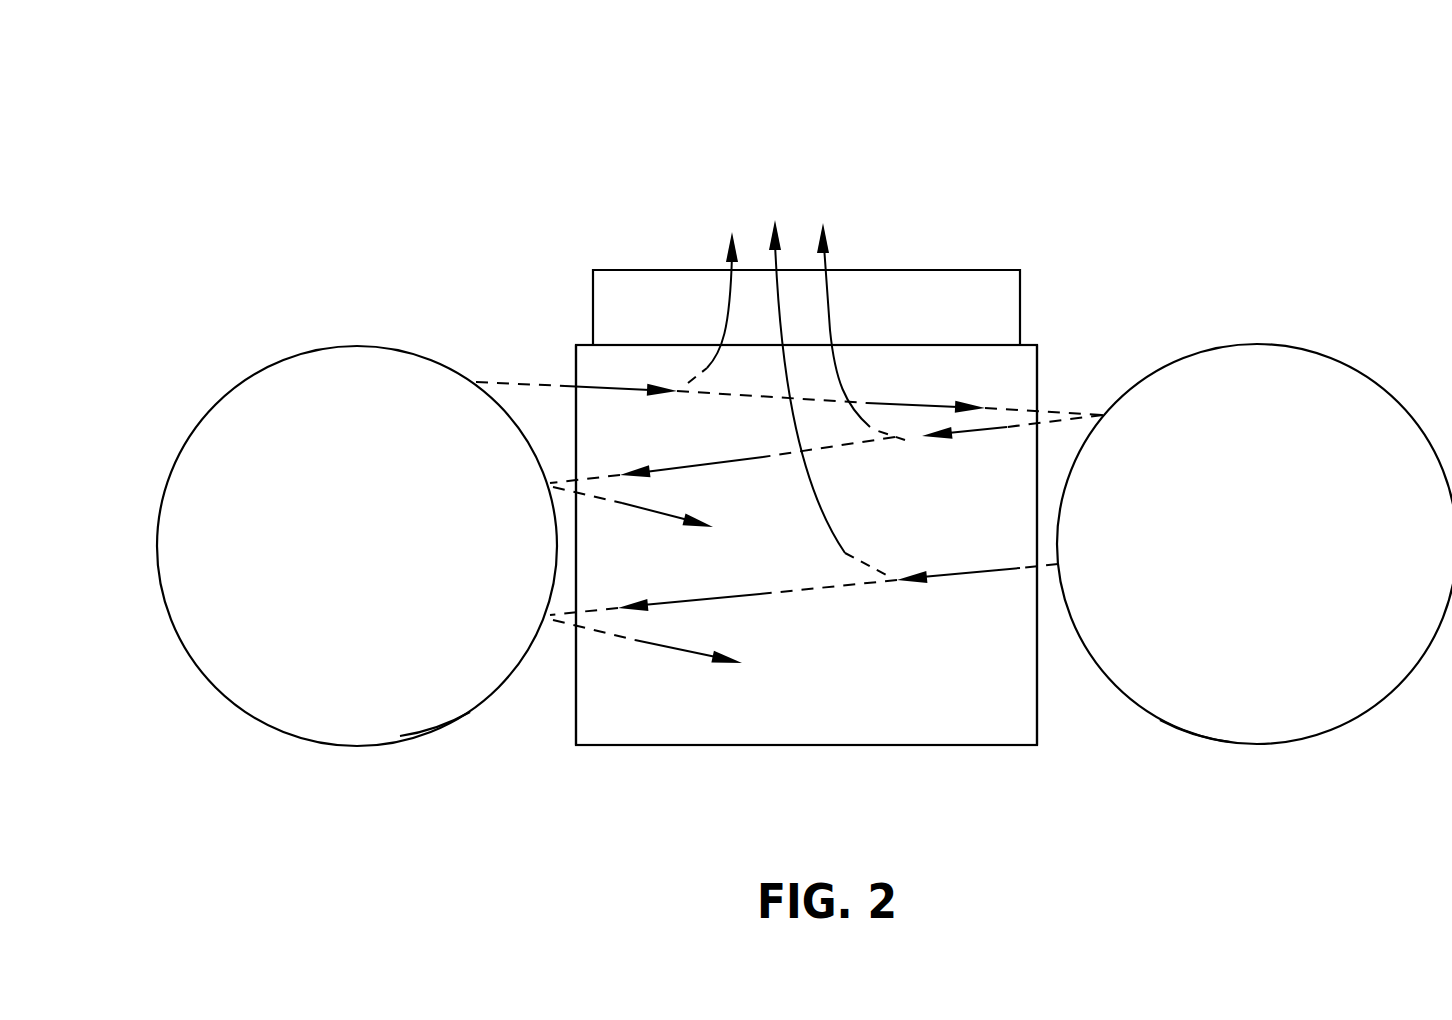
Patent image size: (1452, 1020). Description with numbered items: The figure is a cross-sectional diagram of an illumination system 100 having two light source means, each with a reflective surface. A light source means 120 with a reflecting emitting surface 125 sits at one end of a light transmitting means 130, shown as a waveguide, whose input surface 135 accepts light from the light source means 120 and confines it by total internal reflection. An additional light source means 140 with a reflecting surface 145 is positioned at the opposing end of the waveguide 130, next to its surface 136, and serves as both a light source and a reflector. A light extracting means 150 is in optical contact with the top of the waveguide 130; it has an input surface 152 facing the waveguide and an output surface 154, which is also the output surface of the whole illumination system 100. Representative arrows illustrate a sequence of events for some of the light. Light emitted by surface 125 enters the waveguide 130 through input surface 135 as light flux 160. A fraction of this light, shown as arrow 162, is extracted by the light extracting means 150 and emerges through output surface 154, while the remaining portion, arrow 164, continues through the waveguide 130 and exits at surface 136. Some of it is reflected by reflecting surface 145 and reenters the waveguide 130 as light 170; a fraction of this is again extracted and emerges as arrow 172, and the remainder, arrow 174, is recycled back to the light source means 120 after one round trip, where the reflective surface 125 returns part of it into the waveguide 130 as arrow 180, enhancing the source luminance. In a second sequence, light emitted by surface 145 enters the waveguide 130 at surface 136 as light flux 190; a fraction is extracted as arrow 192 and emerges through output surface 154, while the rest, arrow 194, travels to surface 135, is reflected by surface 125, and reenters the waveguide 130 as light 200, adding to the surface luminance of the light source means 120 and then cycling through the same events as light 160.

The illumination system 100 is at (1135, 132).
The light source means 120 is at (291, 385).
The reflecting emitting surface 125 is at (420, 740).
The light transmitting means 130 is at (880, 728).
The input surface 135 is at (576, 708).
The surface 136 is at (1037, 718).
The additional light source means 140 is at (1332, 384).
The reflecting surface 145 is at (1190, 733).
The light extracting means 150 is at (990, 282).
The input surface 152 is at (937, 343).
The output surface 154 is at (915, 268).
The light flux 160 is at (622, 393).
The extracted light 162 is at (714, 289).
The remaining light 164 is at (923, 399).
The reentering light 170 is at (978, 433).
The extracted light 172 is at (858, 312).
The recycled light 174 is at (685, 460).
The reflected light 180 is at (667, 513).
The light flux 190 is at (952, 572).
The extracted light 192 is at (823, 381).
The remaining light 194 is at (694, 598).
The reentering light 200 is at (678, 648).